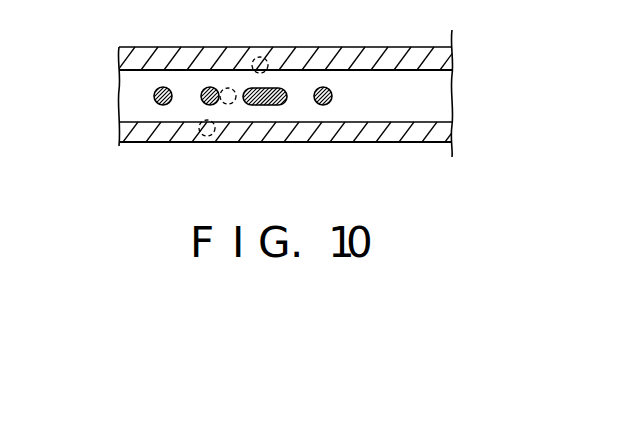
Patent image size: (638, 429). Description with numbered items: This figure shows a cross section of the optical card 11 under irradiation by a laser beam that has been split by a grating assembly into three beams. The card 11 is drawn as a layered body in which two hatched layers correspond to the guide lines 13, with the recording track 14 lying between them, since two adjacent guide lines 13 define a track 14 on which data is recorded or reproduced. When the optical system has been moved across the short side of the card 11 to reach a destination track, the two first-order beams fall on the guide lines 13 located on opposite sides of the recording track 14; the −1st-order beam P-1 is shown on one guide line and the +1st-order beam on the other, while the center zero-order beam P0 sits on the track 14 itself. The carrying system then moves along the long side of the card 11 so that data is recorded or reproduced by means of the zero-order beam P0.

The optical card 11 is at (452, 37).
The guide lines 13 is at (452, 60).
The track 14 is at (452, 100).
The −1st-order beam P-1 is at (263, 57).
The zero-order beam P0 is at (233, 103).